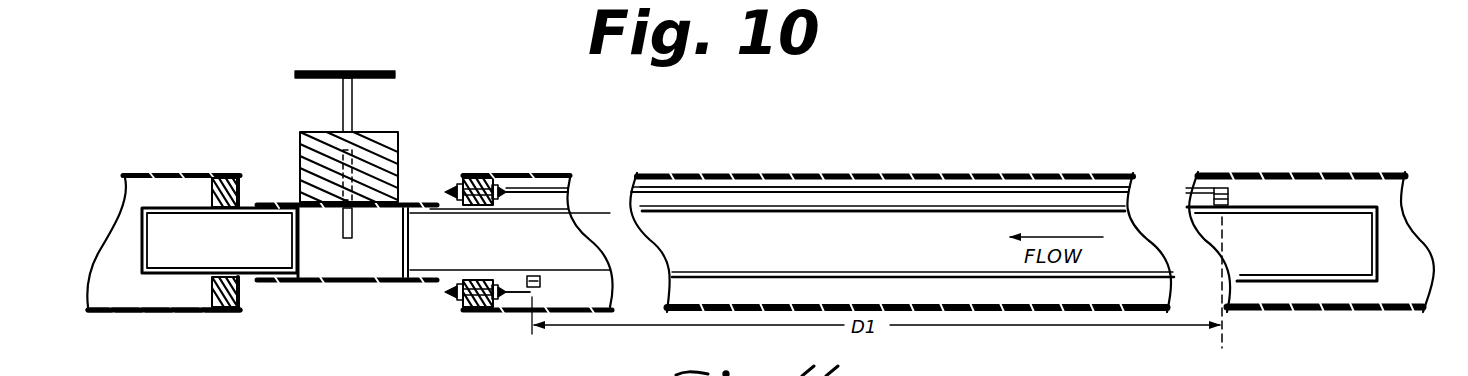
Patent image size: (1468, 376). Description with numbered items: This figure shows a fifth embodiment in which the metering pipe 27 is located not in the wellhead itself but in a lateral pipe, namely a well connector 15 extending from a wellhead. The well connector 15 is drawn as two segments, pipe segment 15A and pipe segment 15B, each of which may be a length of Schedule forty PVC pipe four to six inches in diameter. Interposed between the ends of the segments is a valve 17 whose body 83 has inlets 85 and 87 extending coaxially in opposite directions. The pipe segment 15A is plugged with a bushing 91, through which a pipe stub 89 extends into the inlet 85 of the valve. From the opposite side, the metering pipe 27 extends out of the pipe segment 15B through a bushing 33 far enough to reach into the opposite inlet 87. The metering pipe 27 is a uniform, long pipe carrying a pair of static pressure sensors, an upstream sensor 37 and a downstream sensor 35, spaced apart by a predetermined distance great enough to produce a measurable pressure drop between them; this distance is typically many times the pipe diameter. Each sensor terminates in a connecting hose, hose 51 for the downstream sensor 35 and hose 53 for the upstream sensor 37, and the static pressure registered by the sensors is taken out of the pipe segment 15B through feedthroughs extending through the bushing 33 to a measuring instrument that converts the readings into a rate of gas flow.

The well connector 15 is at (879, 133).
The pipe segment 15A is at (148, 173).
The pipe segment 15B is at (800, 174).
The valve 17 is at (382, 58).
The metering pipe 27 is at (910, 205).
The bushing 33 is at (478, 178).
The static pressure sensor 35 is at (532, 276).
The static pressure sensor 37 is at (1250, 190).
The connecting hose 51 is at (532, 298).
The connecting hose 53 is at (707, 186).
The valve body 83 is at (325, 266).
The valve inlet 85 is at (268, 222).
The valve inlet 87 is at (418, 218).
The pipe stub 89 is at (172, 274).
The bushing 91 is at (226, 178).